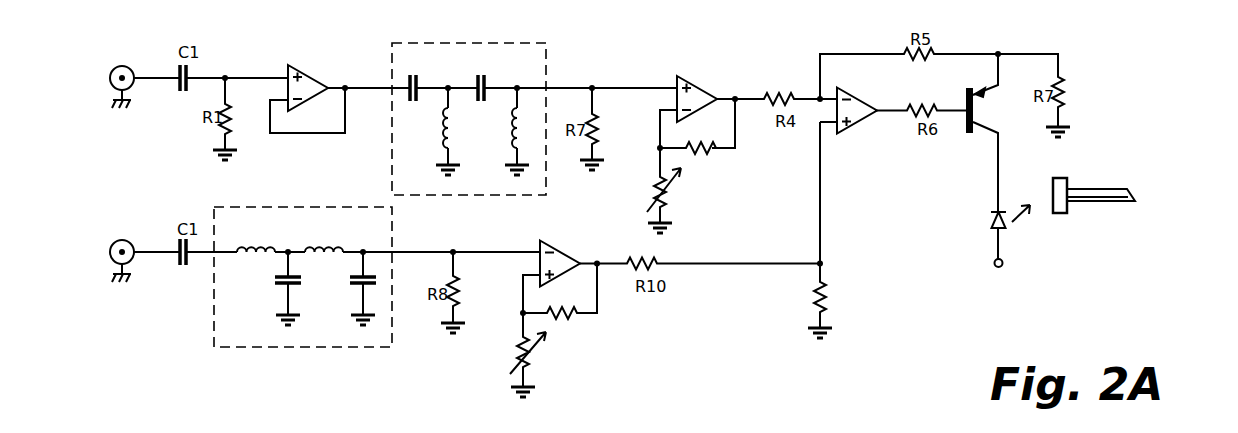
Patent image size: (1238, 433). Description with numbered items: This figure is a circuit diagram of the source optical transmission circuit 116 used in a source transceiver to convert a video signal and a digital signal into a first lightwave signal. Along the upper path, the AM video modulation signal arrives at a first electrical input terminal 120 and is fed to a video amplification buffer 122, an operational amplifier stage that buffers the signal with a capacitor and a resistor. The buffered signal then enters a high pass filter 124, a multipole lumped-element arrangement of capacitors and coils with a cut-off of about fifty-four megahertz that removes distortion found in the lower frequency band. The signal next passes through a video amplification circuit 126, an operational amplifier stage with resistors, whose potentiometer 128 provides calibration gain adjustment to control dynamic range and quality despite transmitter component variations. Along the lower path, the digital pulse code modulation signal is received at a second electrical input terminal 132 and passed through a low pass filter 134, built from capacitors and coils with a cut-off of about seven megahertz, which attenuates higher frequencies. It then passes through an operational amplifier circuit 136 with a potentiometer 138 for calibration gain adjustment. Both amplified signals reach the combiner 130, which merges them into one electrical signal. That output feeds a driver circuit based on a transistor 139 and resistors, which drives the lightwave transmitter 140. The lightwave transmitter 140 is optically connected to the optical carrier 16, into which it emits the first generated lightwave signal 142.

The first electrical input terminal 120 is at (120, 64).
The video amplification buffer 122 is at (306, 72).
The high pass filter 124 is at (453, 42).
The video amplification circuit 126 is at (695, 80).
The potentiometer 128 is at (655, 186).
The combiner 130 is at (854, 92).
The second electrical input terminal 132 is at (120, 240).
The low pass filter 134 is at (302, 348).
The operational amplifier circuit 136 is at (562, 235).
The potentiometer 138 is at (518, 352).
The transistor 139 is at (992, 105).
The lightwave transmitter 140 is at (990, 212).
The first generated lightwave signal 142 is at (1028, 227).
The optical carrier 16 is at (1107, 203).
The source optical transmission circuit 116 is at (923, 313).